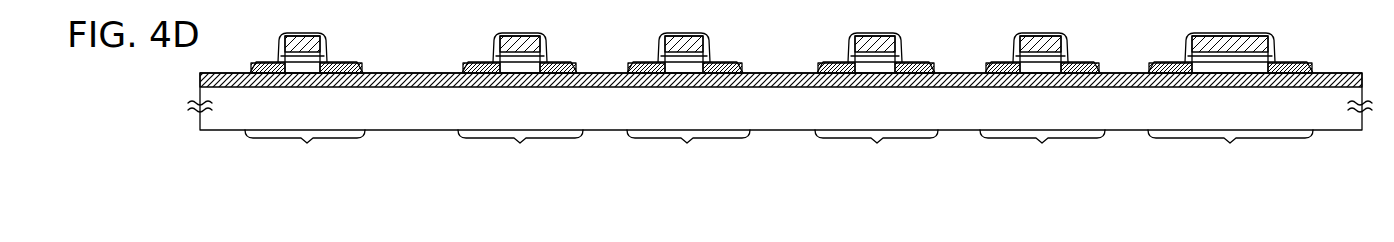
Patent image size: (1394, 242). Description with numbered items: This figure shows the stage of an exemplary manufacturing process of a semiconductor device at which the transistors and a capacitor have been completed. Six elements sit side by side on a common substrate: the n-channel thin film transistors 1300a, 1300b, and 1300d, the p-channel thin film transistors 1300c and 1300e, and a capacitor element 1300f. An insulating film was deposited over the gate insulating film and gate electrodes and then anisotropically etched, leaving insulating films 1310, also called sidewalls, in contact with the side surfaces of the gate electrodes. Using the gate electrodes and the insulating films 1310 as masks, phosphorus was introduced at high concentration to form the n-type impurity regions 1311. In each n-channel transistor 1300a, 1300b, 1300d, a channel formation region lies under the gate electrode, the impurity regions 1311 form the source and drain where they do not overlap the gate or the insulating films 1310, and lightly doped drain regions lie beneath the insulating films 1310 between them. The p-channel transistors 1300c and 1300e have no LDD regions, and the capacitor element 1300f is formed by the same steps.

The insulating films 1310 is at (327, 50).
The n-type impurity regions 1311 is at (258, 62).
The n-channel thin film transistor 1300a is at (329, 105).
The n-channel thin film transistor 1300b is at (520, 105).
The p-channel thin film transistor 1300c is at (688, 105).
The n-channel thin film transistor 1300d is at (876, 105).
The p-channel thin film transistor 1300e is at (1042, 105).
The capacitor element 1300f is at (1230, 105).